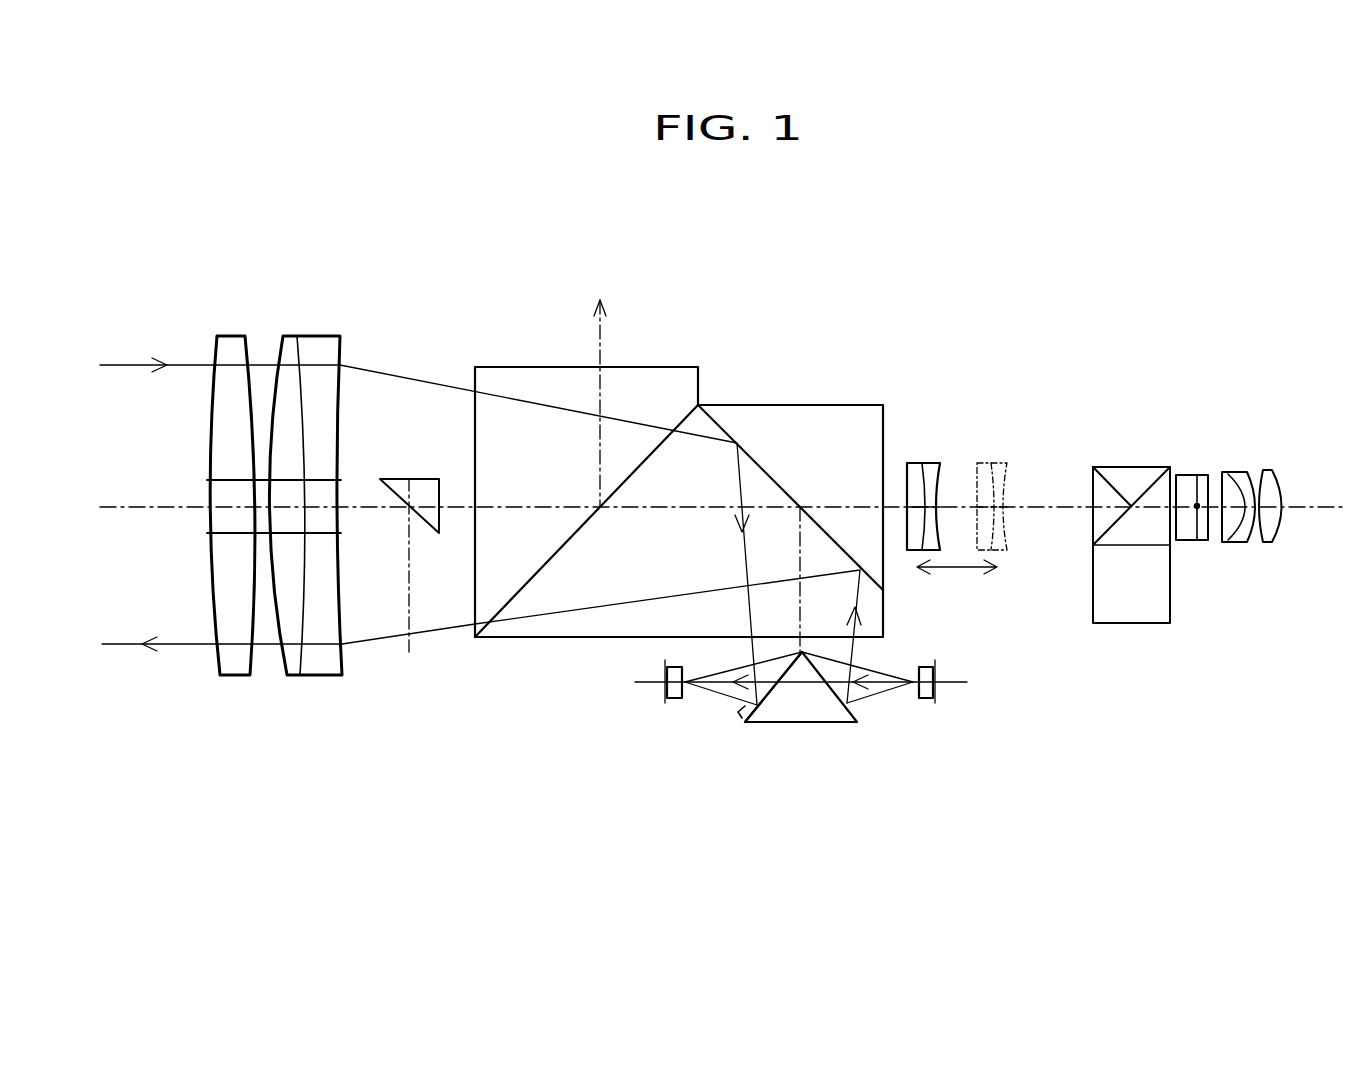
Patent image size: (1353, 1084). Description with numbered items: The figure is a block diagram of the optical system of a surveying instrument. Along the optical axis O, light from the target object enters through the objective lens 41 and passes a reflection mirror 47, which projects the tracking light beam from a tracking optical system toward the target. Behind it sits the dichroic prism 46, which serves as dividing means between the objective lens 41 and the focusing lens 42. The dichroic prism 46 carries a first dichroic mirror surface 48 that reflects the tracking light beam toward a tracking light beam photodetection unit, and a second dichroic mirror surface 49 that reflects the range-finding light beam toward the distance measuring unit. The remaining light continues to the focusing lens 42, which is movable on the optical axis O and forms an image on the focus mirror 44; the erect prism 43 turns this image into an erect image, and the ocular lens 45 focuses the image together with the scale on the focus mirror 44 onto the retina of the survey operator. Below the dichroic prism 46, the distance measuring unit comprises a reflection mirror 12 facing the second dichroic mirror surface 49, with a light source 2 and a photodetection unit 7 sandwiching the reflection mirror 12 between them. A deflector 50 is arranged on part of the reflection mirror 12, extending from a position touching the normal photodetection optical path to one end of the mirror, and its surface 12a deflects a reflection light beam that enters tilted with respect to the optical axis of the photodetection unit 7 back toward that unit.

The optical axis O is at (1063, 503).
The objective lens 41 is at (197, 322).
The reflection mirror 47 is at (411, 479).
The dichroic prism 46 is at (563, 640).
The first dichroic mirror surface 48 is at (557, 552).
The second dichroic mirror surface 49 is at (758, 464).
The focusing lens 42 is at (923, 463).
The erect prism 43 is at (1103, 470).
The focus mirror 44 is at (1192, 542).
The ocular lens 45 is at (1293, 457).
The reflection mirror 12 is at (802, 723).
The inclined surface of projection prism 12a is at (781, 672).
The deflector 50 is at (738, 712).
The photodetection unit 7 is at (673, 701).
The light source 2 is at (935, 663).